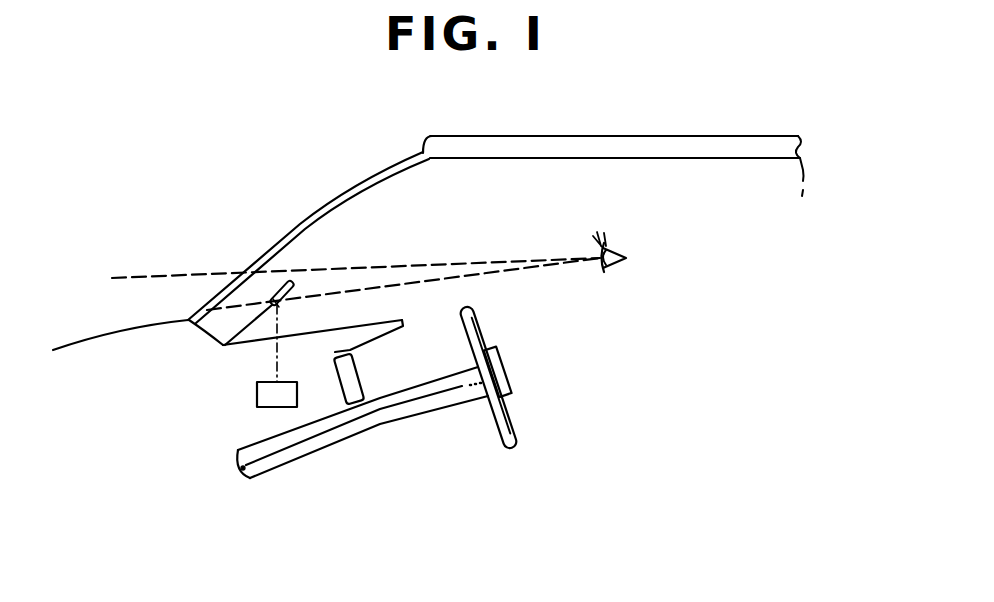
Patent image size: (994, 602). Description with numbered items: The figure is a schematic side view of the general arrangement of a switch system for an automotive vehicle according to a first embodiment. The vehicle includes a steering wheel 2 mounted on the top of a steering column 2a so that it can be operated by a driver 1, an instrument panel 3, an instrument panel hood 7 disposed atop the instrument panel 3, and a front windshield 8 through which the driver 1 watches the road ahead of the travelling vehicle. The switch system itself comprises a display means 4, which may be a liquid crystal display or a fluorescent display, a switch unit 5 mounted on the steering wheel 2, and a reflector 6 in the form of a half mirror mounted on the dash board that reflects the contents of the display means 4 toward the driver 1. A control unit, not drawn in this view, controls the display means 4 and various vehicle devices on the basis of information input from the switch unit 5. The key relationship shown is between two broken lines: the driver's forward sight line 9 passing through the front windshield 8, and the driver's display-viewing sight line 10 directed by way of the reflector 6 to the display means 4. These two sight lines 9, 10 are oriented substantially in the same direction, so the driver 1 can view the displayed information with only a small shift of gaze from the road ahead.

The driver 1 is at (619, 252).
The steering wheel 2 is at (513, 446).
The steering column 2a is at (394, 424).
The instrument panel 3 is at (356, 378).
The display means 4 is at (257, 396).
The switch unit 5 is at (503, 368).
The reflector 6 is at (290, 283).
The instrument panel hood 7 is at (402, 320).
The front windshield 8 is at (318, 214).
The driver's forward sight line 9 is at (478, 264).
The driver's display-viewing sight line 10 is at (497, 271).